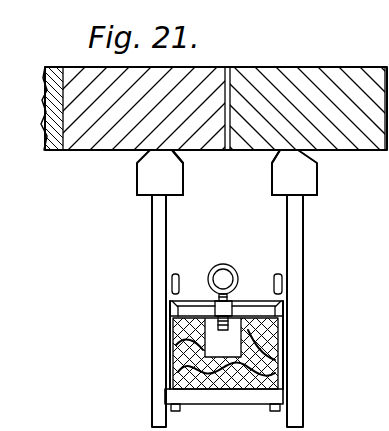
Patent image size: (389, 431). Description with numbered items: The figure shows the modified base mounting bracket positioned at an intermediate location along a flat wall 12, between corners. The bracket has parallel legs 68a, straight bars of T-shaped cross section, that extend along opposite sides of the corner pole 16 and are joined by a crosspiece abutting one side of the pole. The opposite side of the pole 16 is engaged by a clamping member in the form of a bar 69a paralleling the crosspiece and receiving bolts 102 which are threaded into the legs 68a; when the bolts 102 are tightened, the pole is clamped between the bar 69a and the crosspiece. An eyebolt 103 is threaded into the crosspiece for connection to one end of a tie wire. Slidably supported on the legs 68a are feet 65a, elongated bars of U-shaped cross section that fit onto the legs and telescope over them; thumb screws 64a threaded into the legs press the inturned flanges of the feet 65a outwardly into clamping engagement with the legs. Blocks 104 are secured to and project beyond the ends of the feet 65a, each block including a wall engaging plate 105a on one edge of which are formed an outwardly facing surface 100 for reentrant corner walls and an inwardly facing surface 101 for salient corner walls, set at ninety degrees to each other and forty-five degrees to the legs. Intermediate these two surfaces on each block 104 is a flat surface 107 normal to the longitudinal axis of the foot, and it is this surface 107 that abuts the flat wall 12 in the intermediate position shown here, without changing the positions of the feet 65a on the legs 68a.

The concrete slab 12 is at (247, 92).
The outwardly facing wall engaging surface 100 is at (148, 156).
The inwardly facing wall engaging surface 101 is at (272, 156).
The block 104 is at (269, 180).
The wall engaging plate 105a is at (270, 191).
The flat surface 107 is at (297, 154).
The bolts 102 is at (152, 396).
The feet 65a is at (298, 238).
The thumb screws 64a is at (275, 271).
The legs 68a is at (274, 331).
The eyebolt 103 is at (224, 264).
The corner pole 16 is at (275, 366).
The bar 69a is at (268, 411).